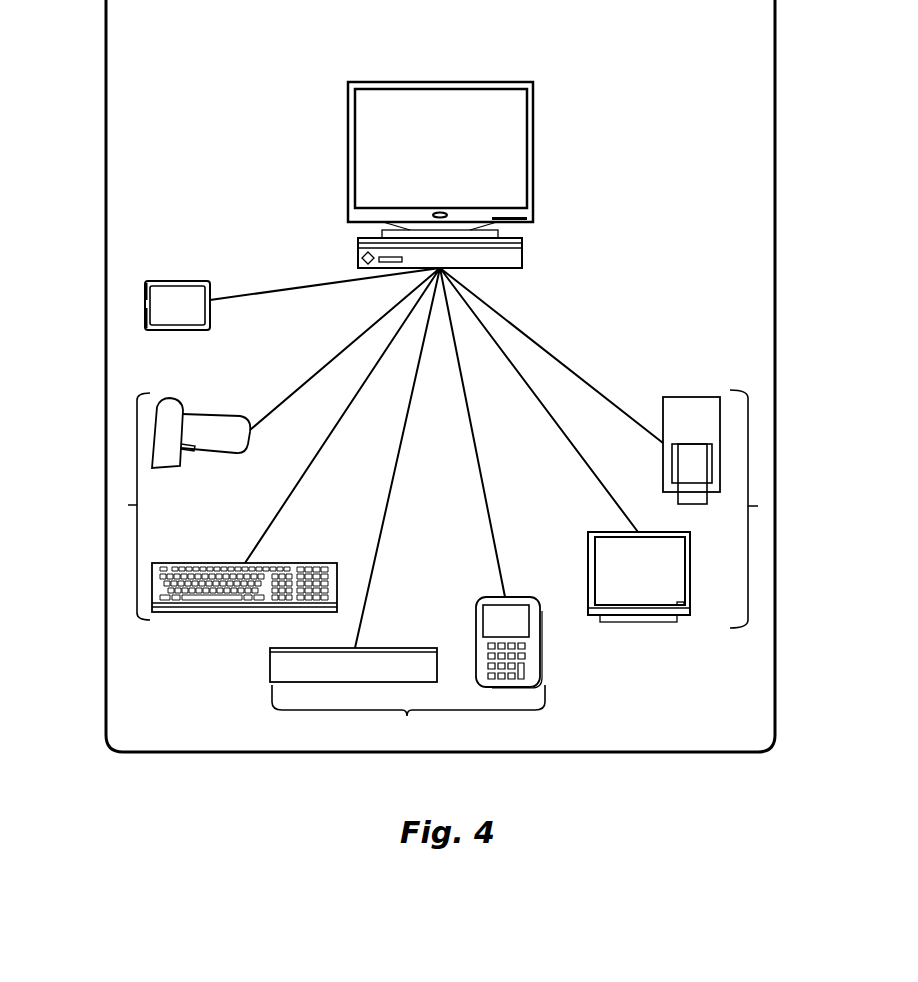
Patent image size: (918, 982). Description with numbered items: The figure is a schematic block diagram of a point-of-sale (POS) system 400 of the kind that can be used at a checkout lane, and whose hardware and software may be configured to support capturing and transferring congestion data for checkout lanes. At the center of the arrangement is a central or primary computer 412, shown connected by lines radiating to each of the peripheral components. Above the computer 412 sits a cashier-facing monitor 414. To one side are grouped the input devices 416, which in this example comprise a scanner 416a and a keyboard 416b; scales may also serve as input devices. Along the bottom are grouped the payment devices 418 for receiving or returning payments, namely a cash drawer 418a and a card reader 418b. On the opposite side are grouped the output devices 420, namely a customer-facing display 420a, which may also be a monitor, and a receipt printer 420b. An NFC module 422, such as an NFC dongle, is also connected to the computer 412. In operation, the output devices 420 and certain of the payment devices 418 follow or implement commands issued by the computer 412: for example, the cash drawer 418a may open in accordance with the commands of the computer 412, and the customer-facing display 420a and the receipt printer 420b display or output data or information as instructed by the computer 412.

The point-of-sale (POS) system 400 is at (440, 376).
The primary computer 412 is at (542, 236).
The monitor 414 is at (340, 159).
The input devices 416 is at (128, 505).
The scanner 416a is at (170, 395).
The keyboard 416b is at (170, 563).
The payment devices 418 is at (407, 716).
The cash drawer 418a is at (270, 662).
The card reader 418b is at (542, 633).
The output devices 420 is at (758, 506).
The customer-facing display 420a is at (606, 532).
The receipt printer 420b is at (687, 397).
The NFC module 422 is at (172, 281).